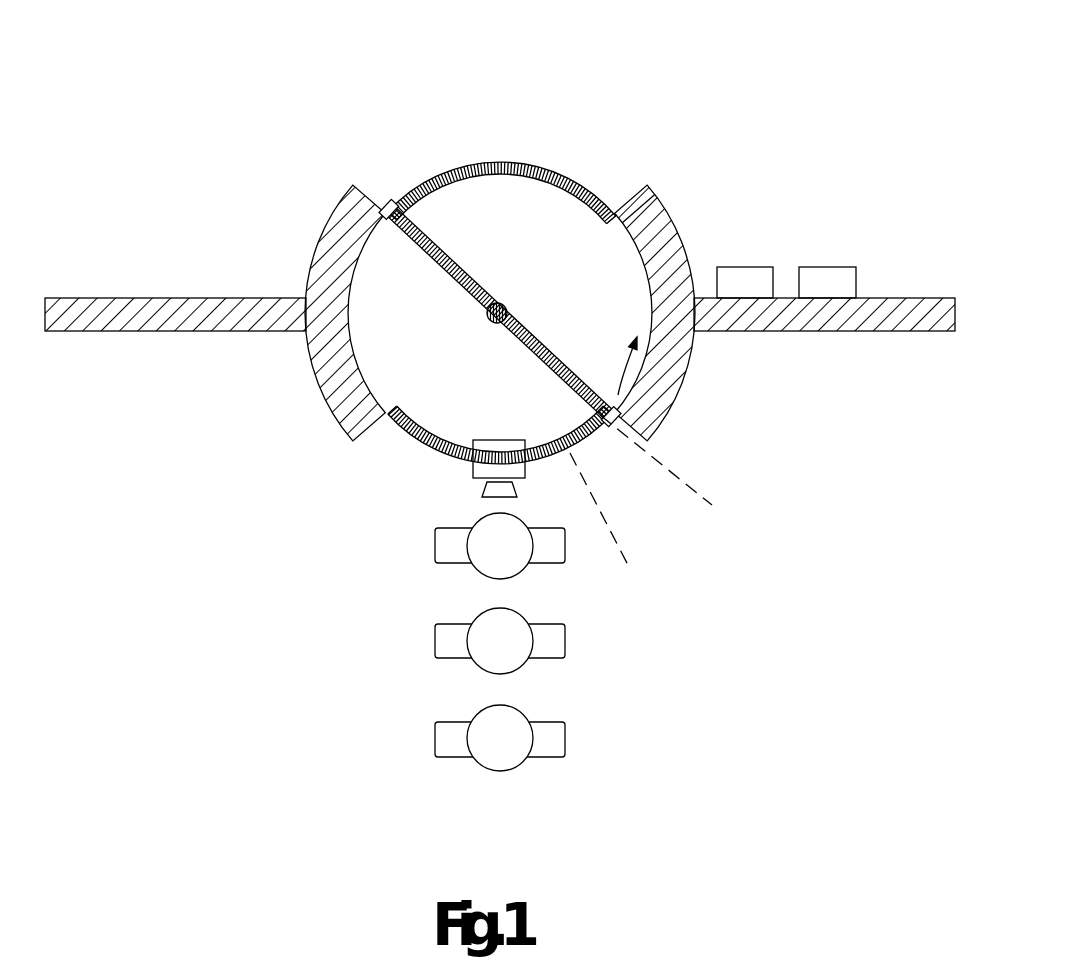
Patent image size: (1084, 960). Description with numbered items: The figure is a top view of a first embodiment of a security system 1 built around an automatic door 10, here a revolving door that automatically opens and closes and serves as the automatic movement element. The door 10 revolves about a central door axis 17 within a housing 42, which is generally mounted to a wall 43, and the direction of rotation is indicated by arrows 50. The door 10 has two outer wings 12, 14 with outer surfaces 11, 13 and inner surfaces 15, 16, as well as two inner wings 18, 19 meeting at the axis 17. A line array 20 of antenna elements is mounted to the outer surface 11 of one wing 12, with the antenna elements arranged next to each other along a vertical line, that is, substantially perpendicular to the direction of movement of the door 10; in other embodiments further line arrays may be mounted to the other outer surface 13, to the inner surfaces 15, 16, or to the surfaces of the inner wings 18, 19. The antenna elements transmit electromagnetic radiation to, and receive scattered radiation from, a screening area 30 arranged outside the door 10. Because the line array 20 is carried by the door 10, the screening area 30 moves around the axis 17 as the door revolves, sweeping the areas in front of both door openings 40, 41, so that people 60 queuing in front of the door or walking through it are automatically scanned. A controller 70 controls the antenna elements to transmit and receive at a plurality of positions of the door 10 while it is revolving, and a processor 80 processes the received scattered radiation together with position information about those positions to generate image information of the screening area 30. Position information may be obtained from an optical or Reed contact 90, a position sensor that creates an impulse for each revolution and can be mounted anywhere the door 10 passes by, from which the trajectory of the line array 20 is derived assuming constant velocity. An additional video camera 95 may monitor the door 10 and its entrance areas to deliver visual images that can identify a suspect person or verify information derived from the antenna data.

The security system 1 is at (790, 95).
The automatic door 10 is at (535, 97).
The outer surface 11 is at (400, 442).
The wing 12 is at (440, 460).
The outer surface 13 is at (430, 210).
The wing 14 is at (577, 186).
The inner surface 15 is at (425, 398).
The inner surface 16 is at (403, 190).
The central door axis 17 is at (507, 303).
The inner wing 18 is at (460, 270).
The inner wing 19 is at (560, 357).
The line array of antenna elements 20 is at (603, 445).
The screening area 30 is at (700, 494).
The door opening 40 is at (557, 503).
The door opening 41 is at (475, 97).
The housing 42 is at (698, 358).
The wall 43 is at (922, 297).
The arrows 50 is at (360, 300).
The people 60 is at (433, 551).
The controller 70 is at (745, 265).
The processor 80 is at (827, 265).
The Reed contact 90 is at (655, 210).
The video camera 95 is at (497, 438).